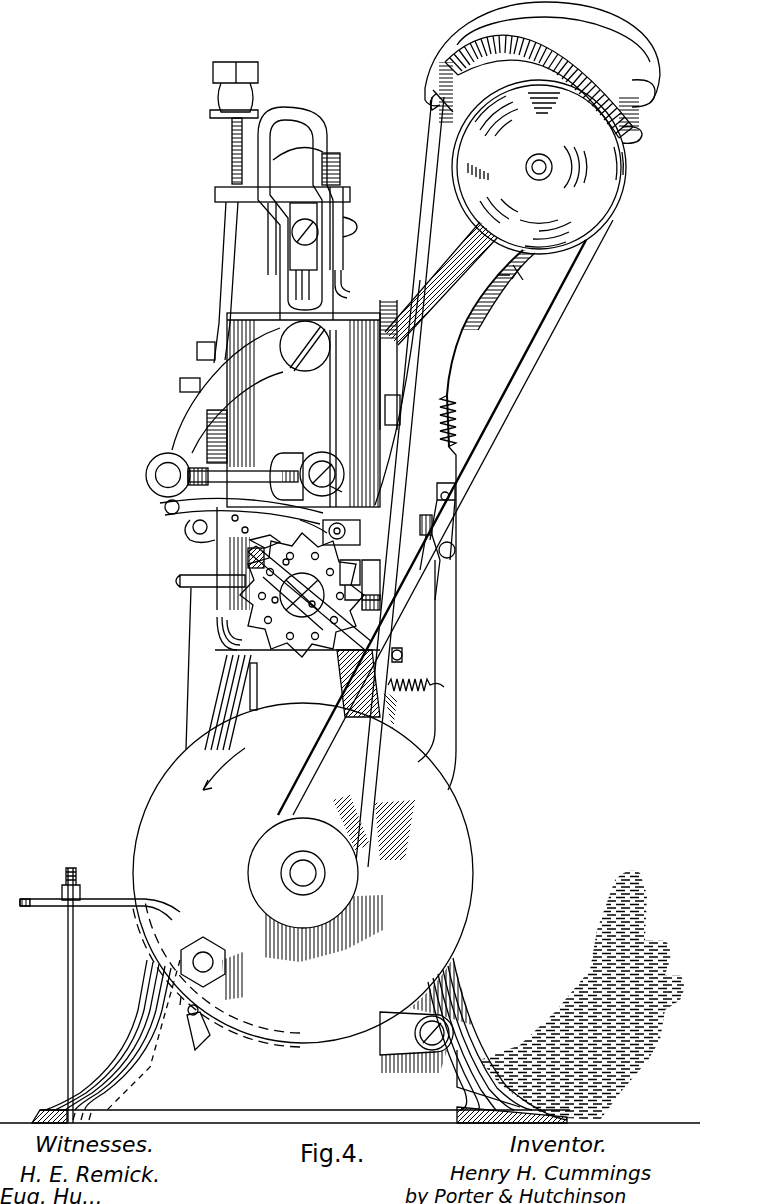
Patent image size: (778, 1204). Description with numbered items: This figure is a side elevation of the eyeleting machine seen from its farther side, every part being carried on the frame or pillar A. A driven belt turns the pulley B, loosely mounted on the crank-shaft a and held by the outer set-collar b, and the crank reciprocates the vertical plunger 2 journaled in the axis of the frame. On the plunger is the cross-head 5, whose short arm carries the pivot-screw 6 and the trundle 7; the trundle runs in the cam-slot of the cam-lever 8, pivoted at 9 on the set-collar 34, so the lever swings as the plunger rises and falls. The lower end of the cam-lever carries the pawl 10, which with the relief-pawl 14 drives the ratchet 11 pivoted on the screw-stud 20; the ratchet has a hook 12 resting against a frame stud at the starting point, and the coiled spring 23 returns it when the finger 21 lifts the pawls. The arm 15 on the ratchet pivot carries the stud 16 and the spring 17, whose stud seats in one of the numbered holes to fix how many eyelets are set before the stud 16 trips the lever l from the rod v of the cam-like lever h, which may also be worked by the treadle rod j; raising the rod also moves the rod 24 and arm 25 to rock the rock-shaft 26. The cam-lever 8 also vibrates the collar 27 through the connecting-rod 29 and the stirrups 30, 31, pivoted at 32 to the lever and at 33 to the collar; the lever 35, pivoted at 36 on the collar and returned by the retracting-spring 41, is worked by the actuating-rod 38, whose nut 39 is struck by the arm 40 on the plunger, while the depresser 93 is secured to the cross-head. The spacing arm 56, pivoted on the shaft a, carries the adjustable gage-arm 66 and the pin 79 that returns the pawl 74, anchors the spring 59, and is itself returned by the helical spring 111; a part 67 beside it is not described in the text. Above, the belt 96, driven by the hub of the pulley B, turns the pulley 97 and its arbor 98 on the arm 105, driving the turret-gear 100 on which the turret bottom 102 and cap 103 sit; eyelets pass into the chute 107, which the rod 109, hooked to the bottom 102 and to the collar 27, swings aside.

The cap of the turret 103 is at (542, 67).
The turret-gear 100 is at (539, 86).
The bottom of the turret 102 is at (646, 80).
The pulley 97 is at (539, 167).
The arbor 98 is at (539, 167).
The rod 109 is at (400, 482).
The belt 96 is at (410, 452).
The arm 105 is at (487, 274).
The chute 107 is at (523, 275).
The arm 56 is at (437, 618).
The spring 59 is at (458, 418).
The pawl 74 is at (442, 514).
The pin 79 is at (449, 497).
The slotted gage-arm 66 is at (434, 540).
The pawl pivot 67 is at (445, 571).
The stud 16 is at (402, 655).
The helical spring 111 is at (416, 693).
The nut 39 is at (230, 92).
The actuating-rod 38 is at (226, 254).
The arm 40 is at (282, 205).
The cross-head 5 is at (272, 245).
The trundle 7 is at (303, 237).
The pivot-screw 6 is at (305, 223).
The vertical plunger 2 is at (315, 225).
The depresser 93 is at (352, 296).
The cam-lever 8 is at (252, 278).
The pivot 9 is at (305, 346).
The collar 27 is at (303, 410).
The set-collar 34 is at (373, 403).
The pivot 36 is at (200, 351).
The lever 35 is at (197, 378).
The retracting-spring 41 is at (211, 436).
The pivot 32 is at (168, 475).
The stirrup 30 is at (196, 469).
The connecting-rod 29 is at (262, 466).
The stirrup 31 is at (308, 476).
The pivot 33 is at (334, 492).
The pawl 10 is at (241, 514).
The relief-pawl 14 is at (202, 527).
The coiled spring 23 is at (313, 520).
The finger 21 is at (265, 536).
The hook or projection 12 is at (349, 532).
The rod 24 is at (351, 573).
The arm 25 is at (374, 579).
The ratchet 11 is at (302, 595).
The screw-stud 20 is at (280, 562).
The arm 15 is at (277, 606).
The spring 17 is at (312, 608).
The rock-shaft 26 is at (372, 604).
The frame or pillar A is at (350, 815).
The lever l is at (217, 858).
The connecting-rod v is at (280, 849).
The pulley B is at (303, 873).
The outer set-collar b is at (303, 873).
The crank-shaft a is at (255, 933).
The curved or cam-like lever h is at (209, 965).
The rod j is at (64, 995).